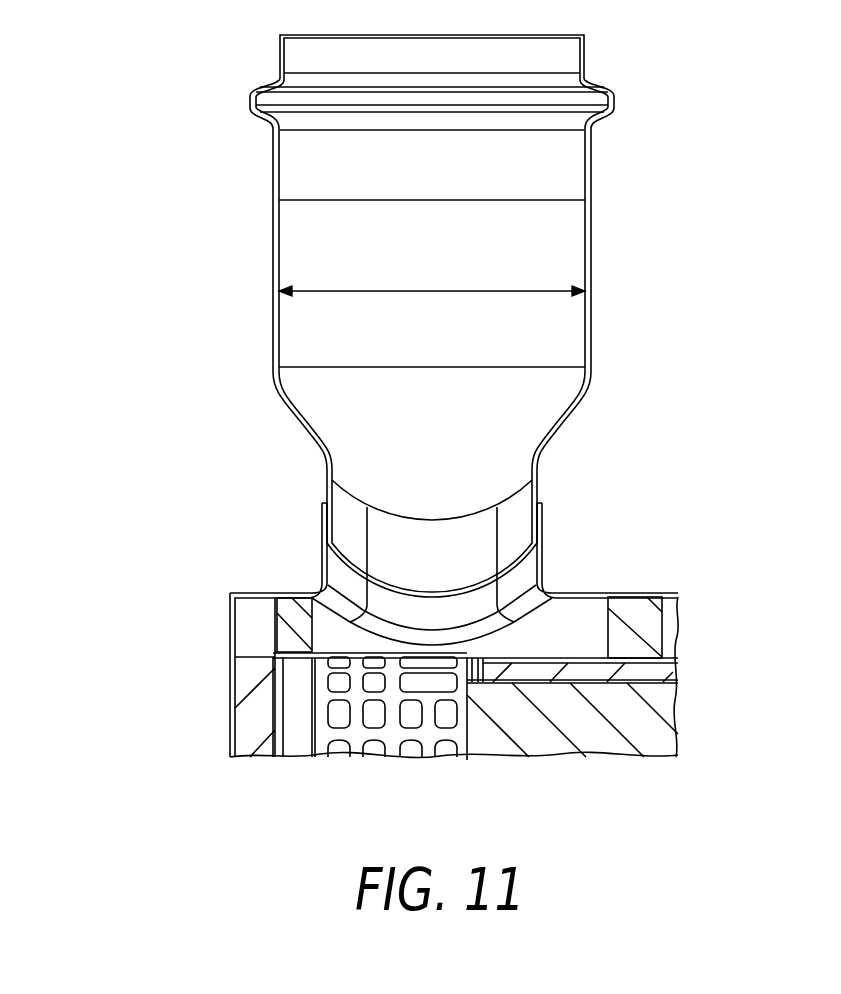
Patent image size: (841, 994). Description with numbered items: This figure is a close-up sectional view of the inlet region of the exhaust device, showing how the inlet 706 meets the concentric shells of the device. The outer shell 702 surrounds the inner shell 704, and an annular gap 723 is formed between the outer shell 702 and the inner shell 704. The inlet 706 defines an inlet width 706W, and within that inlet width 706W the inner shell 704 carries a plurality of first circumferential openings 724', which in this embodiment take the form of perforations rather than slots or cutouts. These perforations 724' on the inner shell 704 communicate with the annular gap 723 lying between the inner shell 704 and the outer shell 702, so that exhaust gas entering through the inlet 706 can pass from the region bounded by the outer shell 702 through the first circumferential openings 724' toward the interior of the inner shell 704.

The inlet 706 is at (590, 262).
The inlet width 706W is at (377, 291).
The outer shell 702 is at (648, 592).
The annular gap 723 is at (568, 618).
The inner shell 704 is at (680, 630).
The first circumferential openings 724' is at (301, 705).